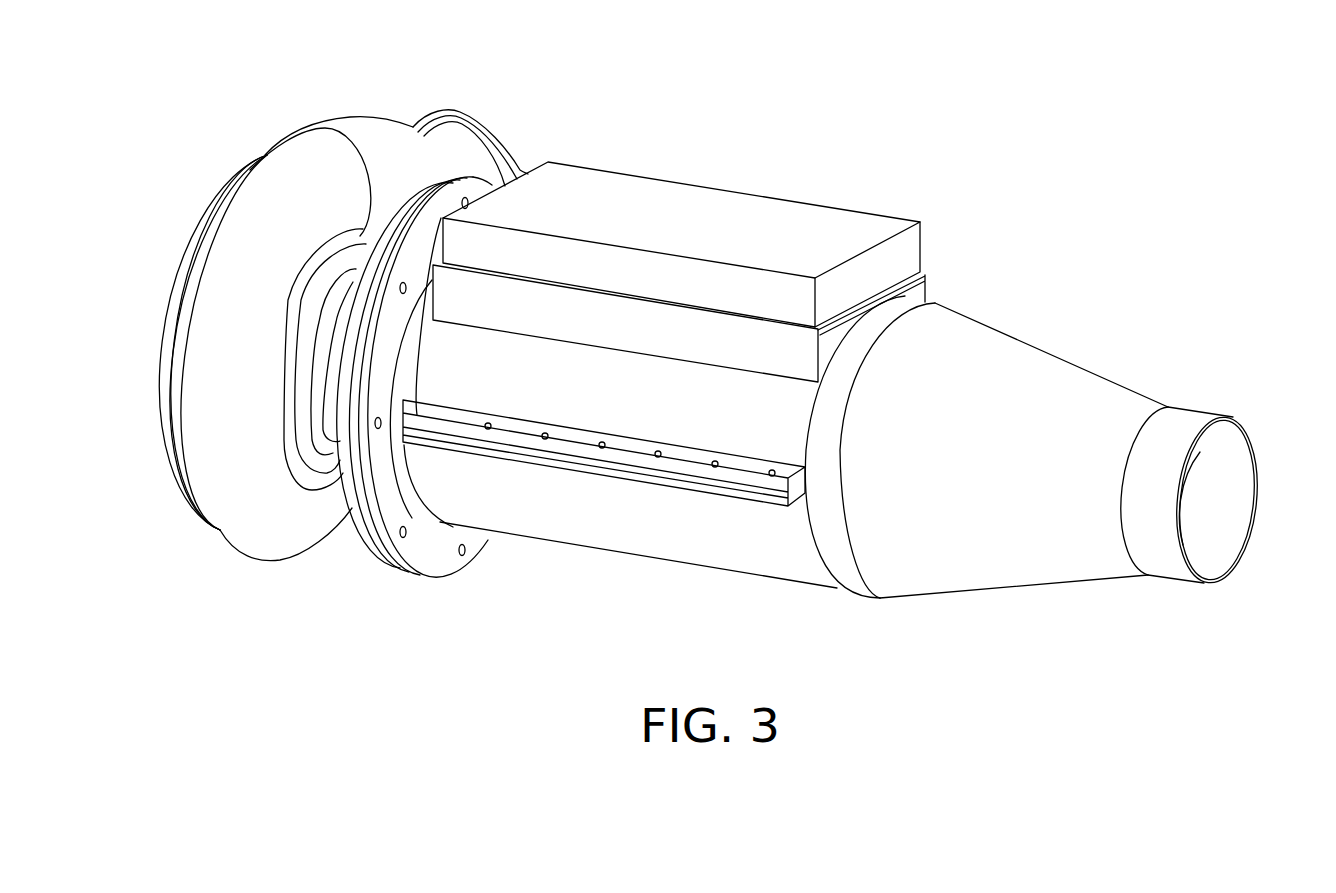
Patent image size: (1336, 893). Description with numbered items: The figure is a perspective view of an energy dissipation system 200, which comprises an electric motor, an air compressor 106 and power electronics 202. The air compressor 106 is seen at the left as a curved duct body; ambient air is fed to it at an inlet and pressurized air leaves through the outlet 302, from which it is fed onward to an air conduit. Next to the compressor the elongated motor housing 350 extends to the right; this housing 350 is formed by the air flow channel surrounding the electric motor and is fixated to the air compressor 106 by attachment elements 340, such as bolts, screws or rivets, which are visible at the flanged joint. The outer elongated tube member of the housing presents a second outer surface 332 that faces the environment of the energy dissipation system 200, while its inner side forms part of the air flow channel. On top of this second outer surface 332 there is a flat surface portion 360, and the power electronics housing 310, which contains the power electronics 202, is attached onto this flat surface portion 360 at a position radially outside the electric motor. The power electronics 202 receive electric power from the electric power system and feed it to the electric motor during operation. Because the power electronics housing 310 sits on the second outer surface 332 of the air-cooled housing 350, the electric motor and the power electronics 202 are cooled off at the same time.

The air compressor 106 is at (377, 152).
The outlet 302 is at (503, 123).
The attachment elements 340 is at (403, 538).
The second outer surface 332 is at (737, 533).
The power electronics housing 310 is at (635, 208).
The power electronics 202 is at (733, 224).
The flat surface portion 360 is at (921, 272).
The housing 350 is at (622, 512).
The energy dissipation system 200 is at (932, 133).